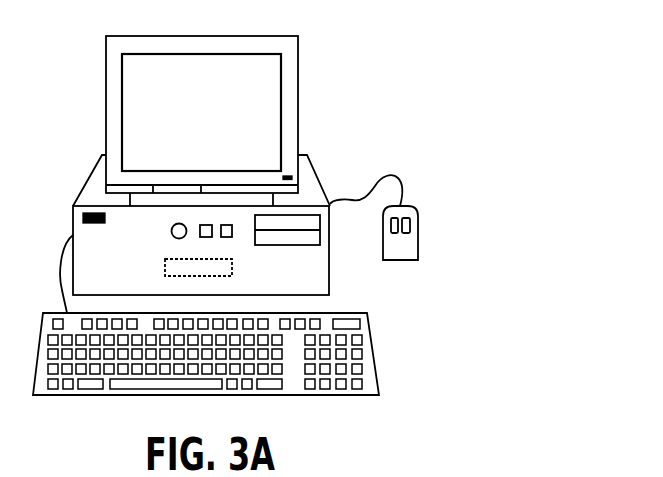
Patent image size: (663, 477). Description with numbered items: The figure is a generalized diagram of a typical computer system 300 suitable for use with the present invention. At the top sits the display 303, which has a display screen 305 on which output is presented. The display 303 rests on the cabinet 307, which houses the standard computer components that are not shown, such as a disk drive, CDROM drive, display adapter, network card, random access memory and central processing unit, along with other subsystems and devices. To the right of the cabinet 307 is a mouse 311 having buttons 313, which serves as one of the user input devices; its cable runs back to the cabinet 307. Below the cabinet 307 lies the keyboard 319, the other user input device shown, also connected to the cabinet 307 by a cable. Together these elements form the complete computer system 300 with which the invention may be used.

The computer system 300 is at (462, 56).
The display 303 is at (298, 98).
The display screen 305 is at (267, 69).
The cabinet 307 is at (310, 183).
The mouse 311 is at (420, 253).
The buttons 313 is at (408, 213).
The keyboard 319 is at (95, 395).